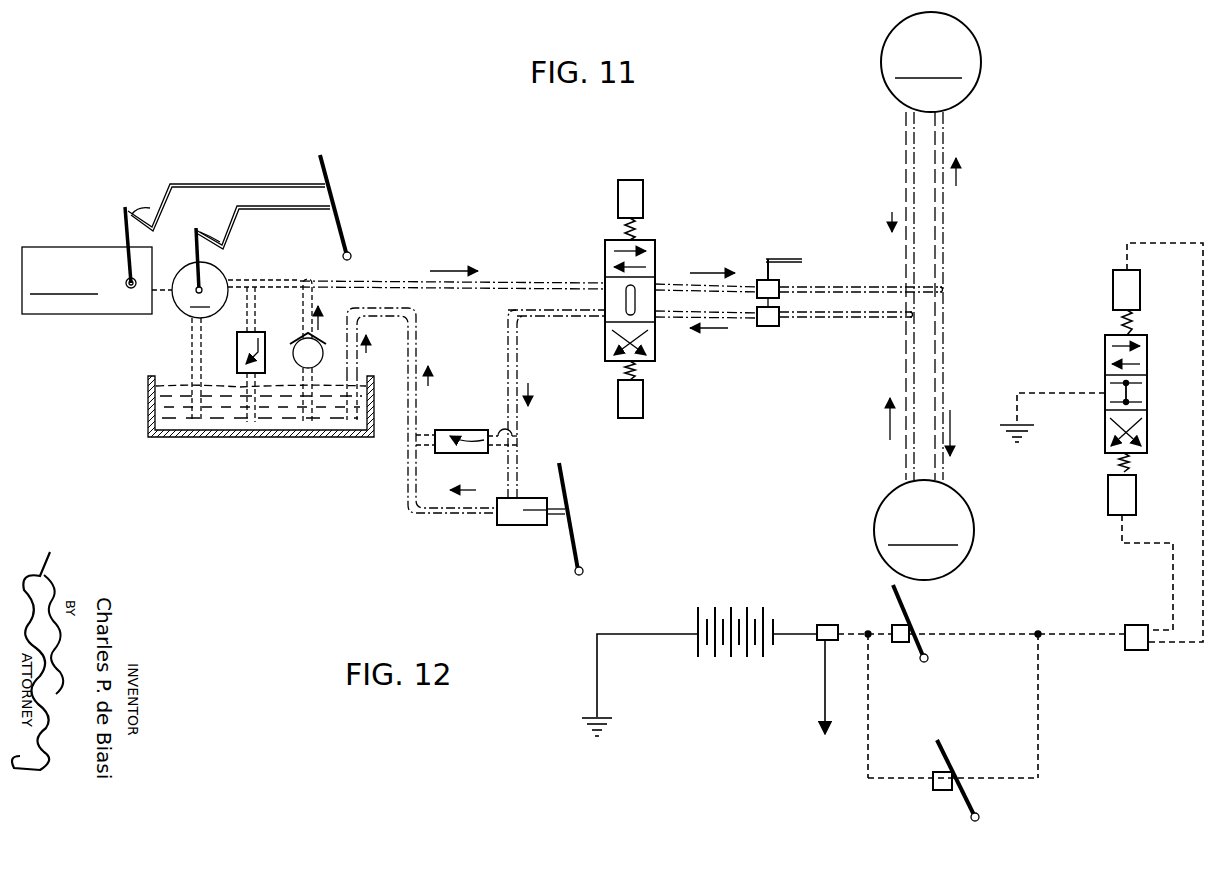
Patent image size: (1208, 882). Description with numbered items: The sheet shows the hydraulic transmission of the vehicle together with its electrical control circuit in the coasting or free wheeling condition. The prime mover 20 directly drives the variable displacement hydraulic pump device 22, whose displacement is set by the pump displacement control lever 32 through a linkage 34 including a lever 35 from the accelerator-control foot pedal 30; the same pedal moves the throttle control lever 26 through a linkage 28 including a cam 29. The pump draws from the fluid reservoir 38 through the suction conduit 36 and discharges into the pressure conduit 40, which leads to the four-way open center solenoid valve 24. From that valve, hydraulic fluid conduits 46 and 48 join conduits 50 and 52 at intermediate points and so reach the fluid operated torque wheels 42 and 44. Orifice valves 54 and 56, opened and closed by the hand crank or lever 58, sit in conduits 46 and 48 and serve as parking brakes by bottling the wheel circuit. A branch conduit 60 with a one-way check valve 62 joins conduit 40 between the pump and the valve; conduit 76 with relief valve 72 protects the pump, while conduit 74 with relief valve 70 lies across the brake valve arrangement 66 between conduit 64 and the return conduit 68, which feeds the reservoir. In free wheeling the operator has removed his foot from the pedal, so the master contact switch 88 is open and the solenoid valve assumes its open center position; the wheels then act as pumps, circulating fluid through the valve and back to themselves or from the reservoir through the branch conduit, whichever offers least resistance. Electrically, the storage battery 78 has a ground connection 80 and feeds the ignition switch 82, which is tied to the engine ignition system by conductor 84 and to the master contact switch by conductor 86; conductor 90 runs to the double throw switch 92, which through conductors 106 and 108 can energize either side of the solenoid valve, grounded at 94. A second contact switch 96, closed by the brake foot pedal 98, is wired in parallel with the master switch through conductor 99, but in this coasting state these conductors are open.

In FIG. 11, the prime mover 20 is at (70, 252).
In FIG. 11, the variable displacement hydraulic pump device 22 is at (212, 276).
In FIG. 11, the 4-way open center solenoid valve 24 is at (655, 350).
In FIG. 12, the 4-way open center solenoid valve 24 is at (1147, 398).
In FIG. 11, the throttle control lever 26 is at (122, 220).
In FIG. 11, the linkage 28 is at (216, 184).
In FIG. 11, the cam 29 is at (140, 204).
In FIG. 11, the accelerator-control foot pedal 30 is at (328, 165).
In FIG. 12, the accelerator-control foot pedal 30 is at (910, 604).
In FIG. 11, the pump displacement control lever 32 is at (194, 256).
In FIG. 11, the linkage 34 is at (272, 210).
In FIG. 11, the lever 35 is at (210, 234).
In FIG. 11, the conduit 36 is at (192, 360).
In FIG. 11, the fluid reservoir 38 is at (270, 438).
In FIG. 11, the conduit 40 is at (500, 282).
In FIG. 11, the wheel 42 is at (972, 78).
In FIG. 11, the wheel 44 is at (890, 507).
In FIG. 11, the hydraulic fluid conduit 46 is at (842, 286).
In FIG. 11, the hydraulic fluid conduit 48 is at (840, 318).
In FIG. 11, the conduit 50 is at (944, 242).
In FIG. 11, the conduit 52 is at (906, 382).
In FIG. 11, the orifice valve 54 is at (757, 278).
In FIG. 11, the orifice valve 56 is at (768, 326).
In FIG. 11, the hand crank or lever 58 is at (786, 258).
In FIG. 11, the branch conduit 60 is at (313, 300).
In FIG. 11, the one-way check valve 62 is at (330, 368).
In FIG. 11, the conduit 64 is at (518, 358).
In FIG. 11, the brake valve arrangement 66 is at (514, 526).
In FIG. 11, the return conduit 68 is at (418, 344).
In FIG. 11, the relief valve 70 is at (470, 430).
In FIG. 11, the relief valve 72 is at (237, 354).
In FIG. 11, the conduit 74 is at (512, 436).
In FIG. 11, the conduit 76 is at (256, 320).
In FIG. 12, the storage battery 78 is at (742, 608).
In FIG. 12, the ground connection 80 is at (644, 632).
In FIG. 12, the ignition switch 82 is at (830, 626).
In FIG. 12, the conductor 84 is at (824, 688).
In FIG. 12, the conductor 86 is at (858, 632).
In FIG. 12, the master contact switch 88 is at (900, 642).
In FIG. 12, the conductor 90 is at (994, 632).
In FIG. 12, the double throw switch 92 is at (1134, 650).
In FIG. 12, the ground 94 is at (1056, 393).
In FIG. 12, the contact switch 96 is at (940, 788).
In FIG. 11, the brake foot pedal 98 is at (570, 484).
In FIG. 12, the brake foot pedal 98 is at (944, 744).
In FIG. 12, the conductor 99 is at (1040, 722).
In FIG. 12, the conductor 106 is at (1176, 244).
In FIG. 12, the conductor 108 is at (1150, 548).